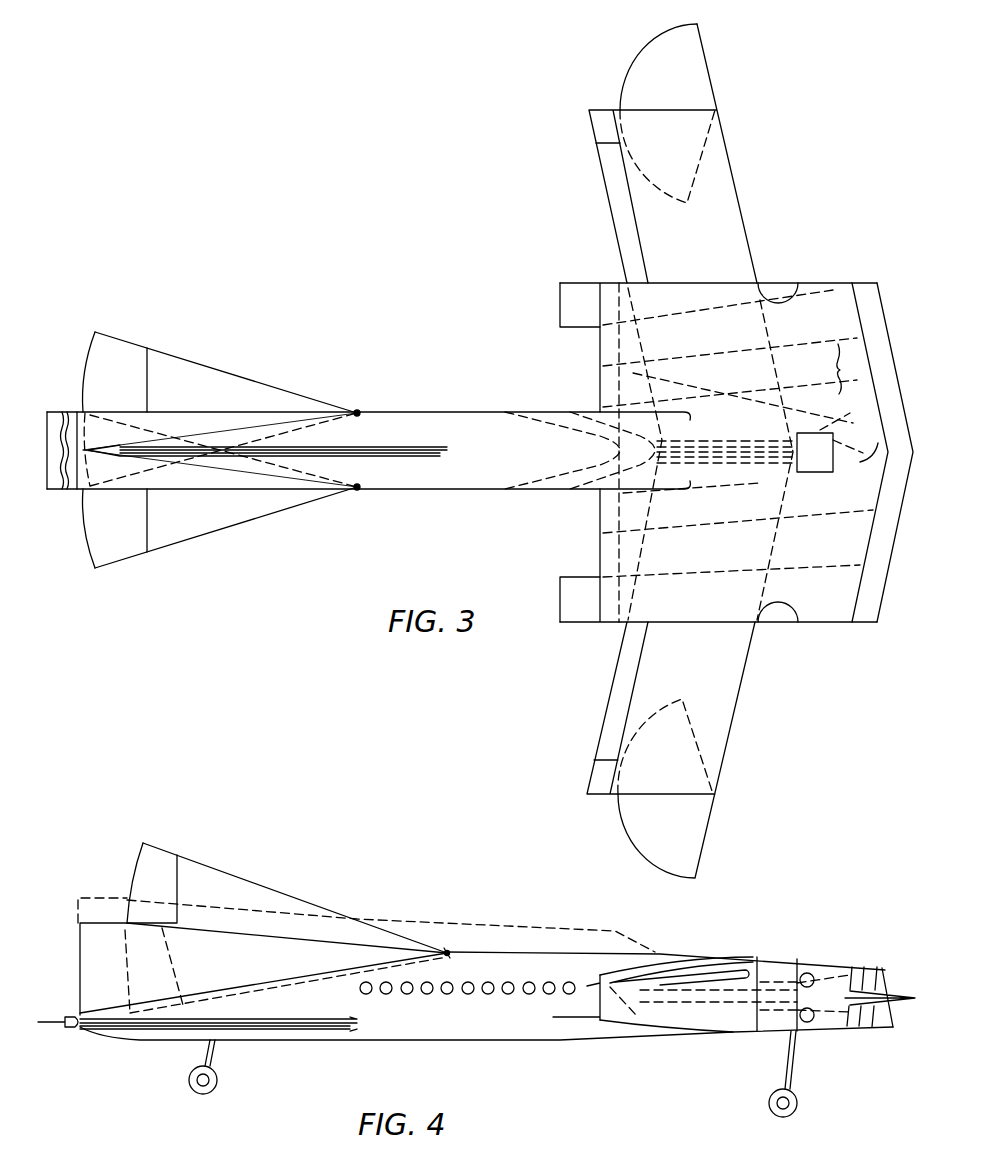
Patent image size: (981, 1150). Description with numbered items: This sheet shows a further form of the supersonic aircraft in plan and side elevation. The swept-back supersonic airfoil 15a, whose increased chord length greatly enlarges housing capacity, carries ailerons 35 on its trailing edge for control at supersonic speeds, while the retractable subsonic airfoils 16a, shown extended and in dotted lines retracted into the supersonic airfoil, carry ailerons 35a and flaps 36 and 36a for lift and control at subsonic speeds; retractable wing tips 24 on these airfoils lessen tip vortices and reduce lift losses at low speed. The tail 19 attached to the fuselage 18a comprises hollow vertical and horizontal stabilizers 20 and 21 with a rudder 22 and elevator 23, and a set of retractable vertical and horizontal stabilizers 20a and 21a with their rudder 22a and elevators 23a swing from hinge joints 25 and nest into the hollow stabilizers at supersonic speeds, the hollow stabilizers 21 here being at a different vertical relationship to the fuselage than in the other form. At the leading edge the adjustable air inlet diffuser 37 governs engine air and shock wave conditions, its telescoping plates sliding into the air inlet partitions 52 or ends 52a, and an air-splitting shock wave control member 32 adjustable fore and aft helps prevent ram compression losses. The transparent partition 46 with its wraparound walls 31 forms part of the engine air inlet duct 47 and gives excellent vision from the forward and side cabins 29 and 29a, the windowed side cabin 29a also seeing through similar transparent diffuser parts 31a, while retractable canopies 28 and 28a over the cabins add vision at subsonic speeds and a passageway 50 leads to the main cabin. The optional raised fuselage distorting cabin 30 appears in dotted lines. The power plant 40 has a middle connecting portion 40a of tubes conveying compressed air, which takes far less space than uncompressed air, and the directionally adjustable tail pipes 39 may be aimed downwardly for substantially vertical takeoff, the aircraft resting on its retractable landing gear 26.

In FIG. 3, the supersonic airfoil 15a is at (722, 290).
In FIG. 4, the supersonic airfoil 15a is at (735, 1034).
In FIG. 3, the retractable subsonic airfoil 16a is at (733, 196).
In FIG. 4, the retractable subsonic airfoil 16a is at (733, 970).
In FIG. 3, the fuselage 18a is at (447, 412).
In FIG. 4, the fuselage 18a is at (565, 1040).
In FIG. 3, the tail 19 is at (240, 490).
In FIG. 4, the tail 19 is at (243, 985).
In FIG. 3, the hollow vertical stabilizer 20 is at (392, 448).
In FIG. 4, the hollow vertical stabilizer 20 is at (264, 946).
In FIG. 4, the retractable vertical stabilizer 20a is at (298, 898).
In FIG. 3, the hollow horizontal stabilizer 21 is at (192, 489).
In FIG. 4, the hollow horizontal stabilizer 21 is at (297, 1030).
In FIG. 3, the retractable horizontal stabilizer 21a is at (266, 526).
In FIG. 3, the rudder 22 is at (116, 448).
In FIG. 4, the rudder 22 is at (92, 922).
In FIG. 4, the rudder 22a is at (178, 845).
In FIG. 3, the elevator 23 is at (50, 488).
In FIG. 4, the elevator 23 is at (52, 1030).
In FIG. 3, the elevator 23a is at (128, 336).
In FIG. 3, the retractable wing tip 24 is at (706, 80).
In FIG. 3, the hinge joint 25 is at (360, 490).
In FIG. 4, the hinge joint 25 is at (450, 950).
In FIG. 4, the retractable landing gear 26 is at (805, 1103).
In FIG. 3, the retractable transparent canopy 28 is at (797, 460).
In FIG. 4, the retractable transparent canopy 28 is at (825, 960).
In FIG. 3, the retractable transparent canopy 28a is at (790, 622).
In FIG. 4, the retractable transparent canopy 28a is at (797, 962).
In FIG. 3, the forward cabin 29 is at (844, 429).
In FIG. 3, the side cabin 29a is at (758, 644).
In FIG. 4, the side cabin 29a is at (757, 960).
In FIG. 3, the fuselage distorting cabin 30 is at (550, 419).
In FIG. 4, the fuselage distorting cabin 30 is at (553, 926).
In FIG. 3, the transparent wraparound wall 31 is at (846, 481).
In FIG. 3, the transparent air inlet diffuser part 31a is at (816, 600).
In FIG. 3, the shock wave control member 32 is at (877, 622).
In FIG. 4, the shock wave control member 32 is at (893, 1020).
In FIG. 3, the aileron 35 is at (560, 297).
In FIG. 3, the aileron 35a is at (597, 131).
In FIG. 3, the flap 36 is at (610, 699).
In FIG. 3, the flap 36a is at (600, 517).
In FIG. 4, the adjustable air inlet diffuser 37 is at (880, 975).
In FIG. 4, the directionally adjustable tail pipe 39 is at (655, 1020).
In FIG. 3, the power plant 40 is at (670, 318).
In FIG. 4, the power plant 40 is at (670, 999).
In FIG. 4, the middle engine connecting portion 40a is at (720, 1004).
In FIG. 3, the air inlet partition 46 is at (869, 441).
In FIG. 3, the engine air inlet duct 47 is at (768, 370).
In FIG. 3, the passageway 50 is at (724, 447).
In FIG. 3, the air inlet partition 52 is at (738, 457).
In FIG. 3, the air inlet end 52a is at (825, 290).